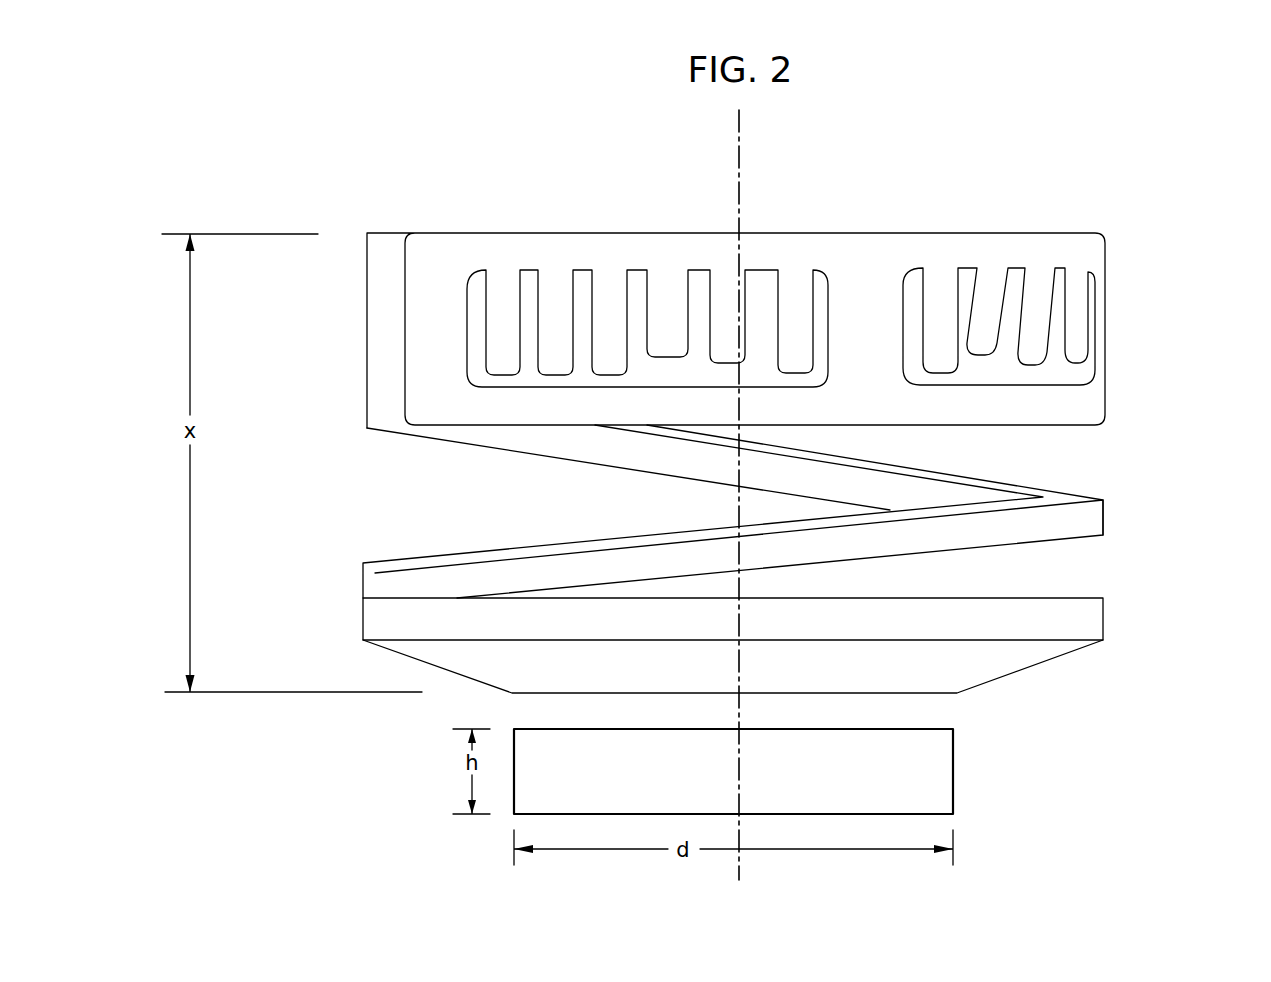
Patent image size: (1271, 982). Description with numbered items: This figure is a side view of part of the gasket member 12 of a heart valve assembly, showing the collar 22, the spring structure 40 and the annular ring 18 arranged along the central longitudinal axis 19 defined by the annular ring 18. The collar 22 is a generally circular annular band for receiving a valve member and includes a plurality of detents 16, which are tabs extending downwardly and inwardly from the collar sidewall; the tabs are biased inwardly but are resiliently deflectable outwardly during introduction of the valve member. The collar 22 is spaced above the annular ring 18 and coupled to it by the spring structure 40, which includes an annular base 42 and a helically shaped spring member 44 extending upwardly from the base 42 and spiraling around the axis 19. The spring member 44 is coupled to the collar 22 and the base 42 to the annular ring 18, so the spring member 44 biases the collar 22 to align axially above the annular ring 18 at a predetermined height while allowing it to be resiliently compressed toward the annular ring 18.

The gasket member 12 is at (1135, 195).
The detents 16 is at (500, 327).
The annular ring 18 is at (953, 766).
The central longitudinal axis 19 is at (739, 162).
The collar 22 is at (367, 232).
The spring structure 40 is at (333, 593).
The annular base 42 is at (1103, 616).
The spring member 44 is at (1103, 511).